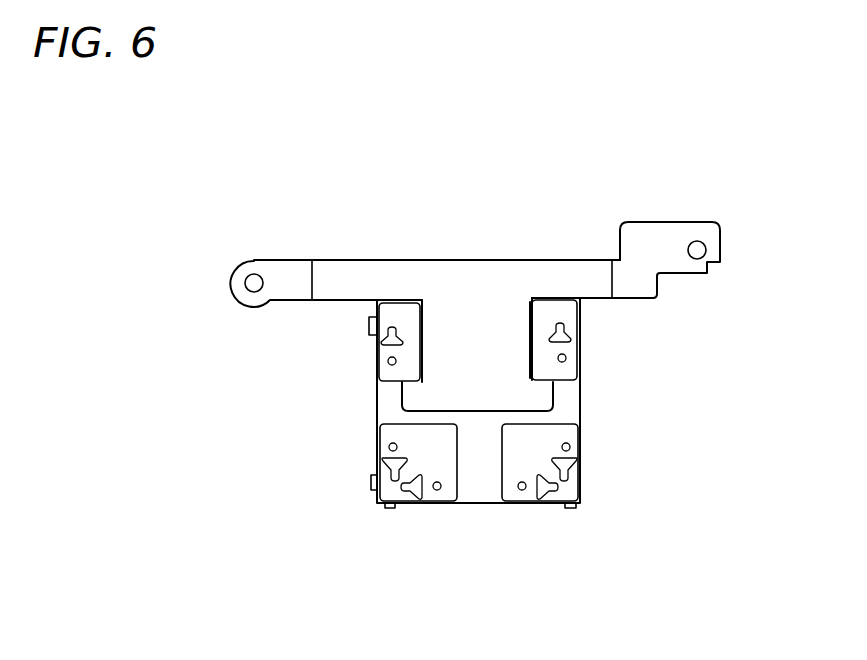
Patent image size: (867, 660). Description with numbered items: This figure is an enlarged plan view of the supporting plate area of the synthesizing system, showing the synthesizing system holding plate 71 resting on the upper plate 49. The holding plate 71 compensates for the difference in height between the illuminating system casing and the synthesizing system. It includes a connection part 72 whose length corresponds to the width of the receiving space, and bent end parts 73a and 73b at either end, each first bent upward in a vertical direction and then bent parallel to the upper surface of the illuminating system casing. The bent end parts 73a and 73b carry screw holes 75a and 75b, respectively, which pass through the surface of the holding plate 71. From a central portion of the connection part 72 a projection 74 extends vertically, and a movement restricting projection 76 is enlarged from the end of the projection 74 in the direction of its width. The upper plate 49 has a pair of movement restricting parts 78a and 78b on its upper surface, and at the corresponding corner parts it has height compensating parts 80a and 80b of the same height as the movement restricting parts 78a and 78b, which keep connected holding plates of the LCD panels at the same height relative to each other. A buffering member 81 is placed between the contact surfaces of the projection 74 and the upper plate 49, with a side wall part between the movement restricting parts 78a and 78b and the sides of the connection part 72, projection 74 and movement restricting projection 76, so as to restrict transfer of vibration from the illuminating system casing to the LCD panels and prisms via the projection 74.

The synthesizing system holding plate 71 is at (360, 228).
The connection part 72 is at (388, 270).
The bent end part 73a is at (282, 270).
The bent end part 73b is at (667, 232).
The projection 74 is at (477, 353).
The screw hole 75a is at (254, 283).
The screw hole 75b is at (697, 250).
The movement restricting projection 76 is at (543, 397).
The movement restricting part 78a is at (378, 354).
The movement restricting part 78b is at (574, 350).
The height compensating part 80a is at (377, 433).
The height compensating part 80b is at (582, 431).
The buffering member 81 is at (532, 331).
The upper plate 49 is at (499, 529).